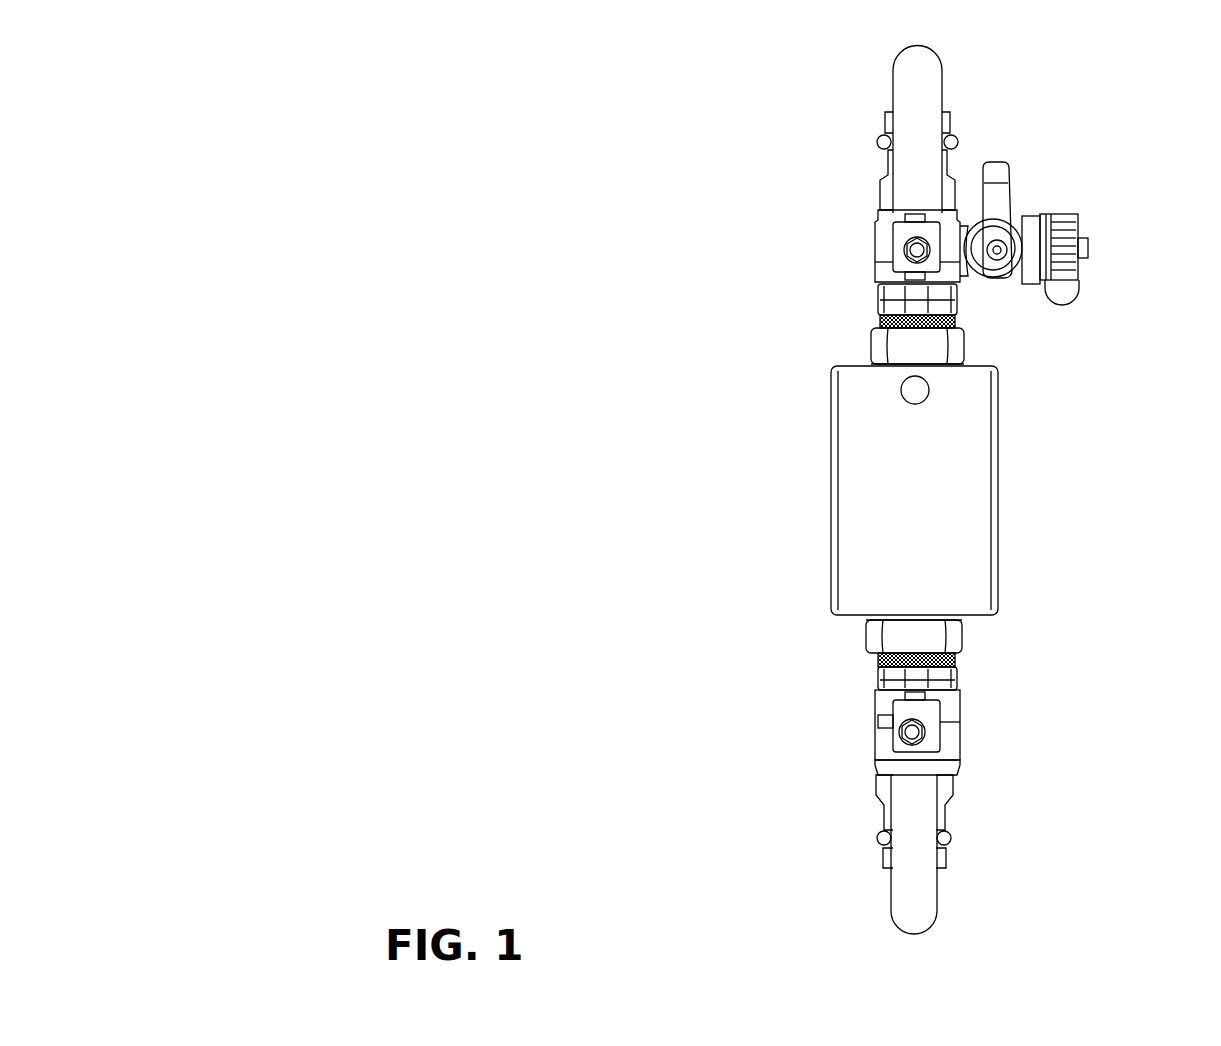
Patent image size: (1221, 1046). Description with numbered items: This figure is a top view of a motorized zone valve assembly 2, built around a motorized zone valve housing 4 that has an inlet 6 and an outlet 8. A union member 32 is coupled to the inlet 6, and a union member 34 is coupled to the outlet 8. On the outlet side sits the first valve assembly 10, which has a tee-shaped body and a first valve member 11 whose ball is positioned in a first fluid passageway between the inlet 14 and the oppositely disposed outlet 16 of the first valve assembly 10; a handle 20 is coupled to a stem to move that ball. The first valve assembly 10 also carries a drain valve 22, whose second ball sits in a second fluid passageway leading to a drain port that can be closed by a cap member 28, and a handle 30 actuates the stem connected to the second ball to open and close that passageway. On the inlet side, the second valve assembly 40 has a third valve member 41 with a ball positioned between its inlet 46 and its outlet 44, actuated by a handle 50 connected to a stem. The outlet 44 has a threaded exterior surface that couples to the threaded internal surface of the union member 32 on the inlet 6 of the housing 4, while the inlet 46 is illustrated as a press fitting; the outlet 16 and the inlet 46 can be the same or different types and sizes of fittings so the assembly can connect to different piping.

The motorized zone valve assembly 2 is at (998, 488).
The motorized zone valve housing 4 is at (872, 477).
The inlet 6 is at (877, 620).
The outlet 8 is at (952, 362).
The first valve assembly 10 is at (880, 270).
The first valve member 11 is at (915, 250).
The inlet 14 is at (878, 317).
The outlet 16 is at (946, 125).
The handle 20 is at (924, 190).
The drain valve 22 is at (1000, 250).
The cap member 28 is at (1073, 232).
The handle 30 is at (997, 197).
The union member 32 is at (957, 637).
The union member 34 is at (955, 340).
The second valve assembly 40 is at (945, 707).
The third valve member 41 is at (912, 735).
The outlet 44 is at (955, 660).
The inlet 46 is at (945, 847).
The handle 50 is at (905, 888).